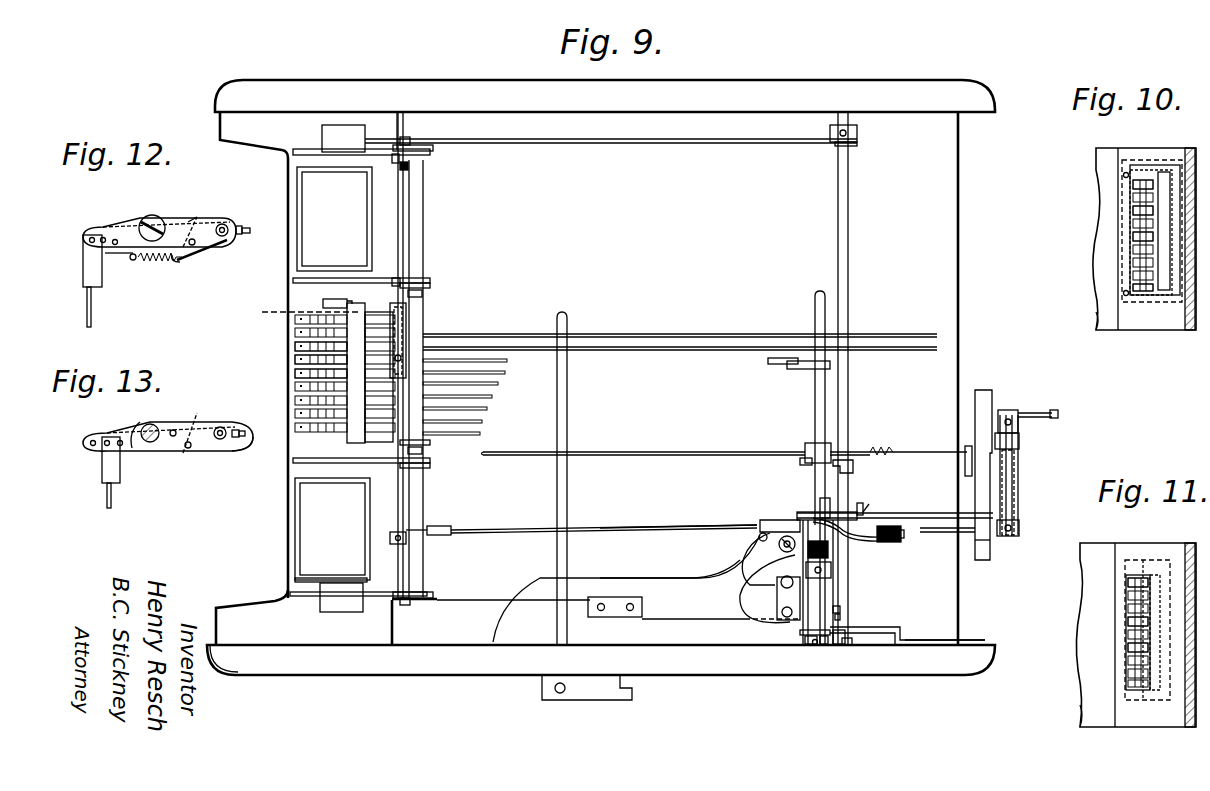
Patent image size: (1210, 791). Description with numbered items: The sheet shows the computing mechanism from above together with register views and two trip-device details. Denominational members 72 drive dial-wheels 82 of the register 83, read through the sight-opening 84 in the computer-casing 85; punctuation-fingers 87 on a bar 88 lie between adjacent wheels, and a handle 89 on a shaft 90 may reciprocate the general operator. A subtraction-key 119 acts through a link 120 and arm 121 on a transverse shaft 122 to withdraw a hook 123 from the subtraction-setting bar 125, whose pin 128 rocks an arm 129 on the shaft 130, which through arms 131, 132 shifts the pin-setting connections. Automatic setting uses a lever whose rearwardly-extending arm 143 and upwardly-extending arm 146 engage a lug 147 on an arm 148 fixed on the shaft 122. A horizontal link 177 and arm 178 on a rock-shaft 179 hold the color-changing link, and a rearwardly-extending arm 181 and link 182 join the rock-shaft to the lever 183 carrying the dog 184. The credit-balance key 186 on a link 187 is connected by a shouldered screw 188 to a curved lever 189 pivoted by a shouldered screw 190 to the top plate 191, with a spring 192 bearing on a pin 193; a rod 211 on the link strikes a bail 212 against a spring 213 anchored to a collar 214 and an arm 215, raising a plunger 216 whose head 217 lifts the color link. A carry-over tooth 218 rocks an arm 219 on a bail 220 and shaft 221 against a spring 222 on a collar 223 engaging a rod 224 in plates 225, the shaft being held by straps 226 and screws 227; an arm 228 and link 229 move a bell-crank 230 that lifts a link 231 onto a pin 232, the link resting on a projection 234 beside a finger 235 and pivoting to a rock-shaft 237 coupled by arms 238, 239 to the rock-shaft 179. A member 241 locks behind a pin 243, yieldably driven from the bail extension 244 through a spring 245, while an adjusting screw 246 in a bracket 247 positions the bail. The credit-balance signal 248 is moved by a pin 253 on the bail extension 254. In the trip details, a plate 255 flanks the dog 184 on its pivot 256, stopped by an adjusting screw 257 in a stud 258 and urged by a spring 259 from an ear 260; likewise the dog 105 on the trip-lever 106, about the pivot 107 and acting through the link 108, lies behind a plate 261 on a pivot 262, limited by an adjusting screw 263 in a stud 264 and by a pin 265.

In FIG. 9, the denominational members 72 is at (680, 384).
In FIG. 9, the dial-wheels 82 is at (296, 348).
In FIG. 10, the dial-wheels 82 is at (1133, 224).
In FIG. 11, the dial-wheels 82 is at (1128, 622).
In FIG. 9, the register 83 is at (292, 345).
In FIG. 10, the register 83 is at (1112, 276).
In FIG. 11, the register 83 is at (1118, 672).
In FIG. 10, the sight-opening 84 is at (1143, 166).
In FIG. 11, the sight-opening 84 is at (1126, 583).
In FIG. 9, the computer-casing 85 is at (290, 676).
In FIG. 10, the computer-casing 85 is at (1097, 331).
In FIG. 11, the computer-casing 85 is at (1080, 728).
In FIG. 10, the punctuation-fingers 87 is at (1153, 198).
In FIG. 11, the punctuation-fingers 87 is at (1148, 592).
In FIG. 10, the bar 88 is at (1120, 187).
In FIG. 9, the handle 89 is at (600, 701).
In FIG. 9, the shaft 90 is at (568, 412).
In FIG. 13, the dog 105 is at (208, 424).
In FIG. 13, the trip-lever 106 is at (116, 432).
In FIG. 12, the pivot 107 is at (148, 216).
In FIG. 13, the pivot 107 is at (150, 424).
In FIG. 13, the link 108 is at (112, 496).
In FIG. 9, the subtraction-key 119 is at (322, 135).
In FIG. 9, the link 120 is at (612, 144).
In FIG. 9, the arm 121 is at (857, 141).
In FIG. 9, the transverse shaft 122 is at (848, 268).
In FIG. 9, the hook 123 is at (854, 466).
In FIG. 9, the subtraction-setting bar 125 is at (665, 451).
In FIG. 9, the pin 128 is at (806, 466).
In FIG. 9, the arm 129 is at (805, 450).
In FIG. 9, the shaft 130 is at (815, 414).
In FIG. 9, the arm 131 is at (800, 369).
In FIG. 9, the arm 132 is at (770, 364).
In FIG. 9, the rearwardly-extending arm 143 is at (922, 638).
In FIG. 9, the upwardly-extending arm 146 is at (823, 645).
In FIG. 9, the lug 147 is at (842, 645).
In FIG. 9, the arm 148 is at (850, 630).
In FIG. 9, the horizontal link 177 is at (952, 535).
In FIG. 9, the arm 178 is at (1019, 528).
In FIG. 9, the rock-shaft 179 is at (1013, 465).
In FIG. 9, the rearwardly-extending arm 181 is at (1035, 405).
In FIG. 9, the link 182 is at (1056, 413).
In FIG. 12, the link 182 is at (91, 305).
In FIG. 12, the lever 183 is at (112, 228).
In FIG. 12, the dog 184 is at (200, 214).
In FIG. 9, the credit-balance key 186 is at (336, 613).
In FIG. 9, the link 187 is at (480, 601).
In FIG. 9, the shouldered screw 188 is at (784, 622).
In FIG. 9, the curved lever 189 is at (746, 590).
In FIG. 9, the shouldered screw 190 is at (780, 549).
In FIG. 9, the top plate 191 is at (706, 575).
In FIG. 9, the spring 192 is at (760, 538).
In FIG. 9, the pin 193 is at (765, 536).
In FIG. 9, the rod 211 is at (746, 570).
In FIG. 9, the bail 212 is at (826, 595).
In FIG. 9, the spring 213 is at (829, 551).
In FIG. 9, the collar 214 is at (832, 572).
In FIG. 9, the arm 215 is at (888, 542).
In FIG. 9, the plunger 216 is at (903, 538).
In FIG. 9, the head 217 is at (872, 520).
In FIG. 9, the carry-over tooth 218 is at (307, 313).
In FIG. 9, the arm 219 is at (378, 322).
In FIG. 9, the bail 220 is at (407, 327).
In FIG. 9, the shaft 221 is at (405, 222).
In FIG. 9, the spring 222 is at (408, 166).
In FIG. 9, the collar 223 is at (410, 160).
In FIG. 9, the rod 224 is at (424, 240).
In FIG. 9, the plates 225 is at (425, 285).
In FIG. 9, the straps 226 is at (410, 145).
In FIG. 9, the screws 227 is at (452, 602).
In FIG. 9, the arm 228 is at (392, 532).
In FIG. 9, the link 229 is at (505, 531).
In FIG. 9, the bell-crank 230 is at (797, 515).
In FIG. 9, the link 231 is at (812, 513).
In FIG. 9, the pin 232 is at (822, 500).
In FIG. 9, the lateral projection 234 is at (872, 505).
In FIG. 9, the finger 235 is at (860, 503).
In FIG. 9, the rock-shaft 237 is at (1015, 492).
In FIG. 9, the arm 238 is at (1019, 441).
In FIG. 9, the arm 239 is at (1000, 414).
In FIG. 9, the member 241 is at (808, 645).
In FIG. 9, the pin 243 is at (846, 648).
In FIG. 9, the upward extension 244 is at (800, 636).
In FIG. 9, the spring 245 is at (814, 648).
In FIG. 9, the adjusting screw 246 is at (841, 609).
In FIG. 9, the bracket 247 is at (842, 618).
In FIG. 9, the signal 248 is at (352, 444).
In FIG. 10, the signal 248 is at (1170, 302).
In FIG. 11, the signal 248 is at (1136, 700).
In FIG. 9, the pin 253 is at (346, 300).
In FIG. 9, the extension 254 is at (385, 275).
In FIG. 12, the plate 255 is at (190, 238).
In FIG. 12, the pivot 256 is at (196, 254).
In FIG. 12, the adjusting screw 257 is at (246, 234).
In FIG. 12, the stud 258 is at (232, 220).
In FIG. 12, the spring 259 is at (157, 262).
In FIG. 12, the ear 260 is at (130, 261).
In FIG. 13, the plate 261 is at (193, 422).
In FIG. 13, the pivot 262 is at (190, 449).
In FIG. 13, the adjusting screw 263 is at (253, 431).
In FIG. 13, the stud 264 is at (240, 451).
In FIG. 13, the pin 265 is at (174, 437).